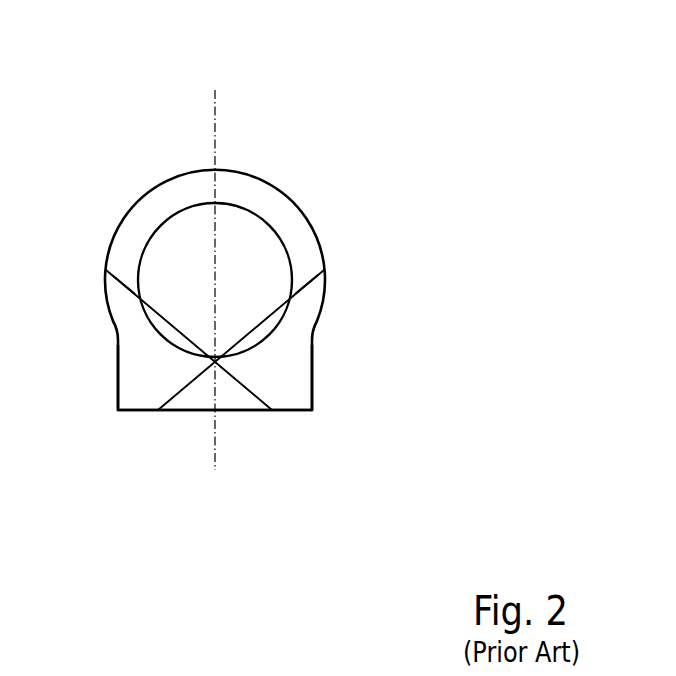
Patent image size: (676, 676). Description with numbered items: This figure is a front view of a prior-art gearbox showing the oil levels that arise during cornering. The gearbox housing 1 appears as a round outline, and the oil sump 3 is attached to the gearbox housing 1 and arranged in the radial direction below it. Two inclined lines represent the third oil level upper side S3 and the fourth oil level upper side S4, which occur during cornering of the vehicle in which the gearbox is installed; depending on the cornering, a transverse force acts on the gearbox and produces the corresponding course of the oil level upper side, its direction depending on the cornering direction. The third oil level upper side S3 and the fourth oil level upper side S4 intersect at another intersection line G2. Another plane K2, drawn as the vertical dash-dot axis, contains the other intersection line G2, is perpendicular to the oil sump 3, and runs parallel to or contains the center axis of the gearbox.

The gearbox housing 1 is at (272, 186).
The oil sump 3 is at (283, 412).
The other plane K2 is at (217, 122).
The other intersection line G2 is at (215, 362).
The third oil level upper side S3 is at (123, 290).
The fourth oil level upper side S4 is at (303, 290).